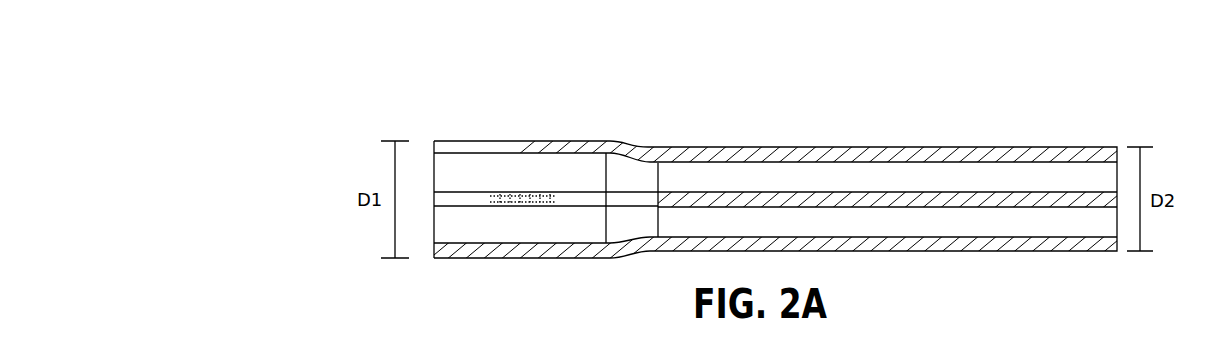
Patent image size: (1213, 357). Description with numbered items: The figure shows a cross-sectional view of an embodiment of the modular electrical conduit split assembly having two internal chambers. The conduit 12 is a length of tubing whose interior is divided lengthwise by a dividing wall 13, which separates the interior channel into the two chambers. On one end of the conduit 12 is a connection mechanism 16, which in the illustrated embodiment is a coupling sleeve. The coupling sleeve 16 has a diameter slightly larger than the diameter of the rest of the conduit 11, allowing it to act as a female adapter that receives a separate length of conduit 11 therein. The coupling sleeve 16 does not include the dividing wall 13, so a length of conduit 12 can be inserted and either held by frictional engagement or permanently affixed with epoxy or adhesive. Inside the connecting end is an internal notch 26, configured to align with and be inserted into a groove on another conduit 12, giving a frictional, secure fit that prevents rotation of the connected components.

The conduit 11 is at (783, 160).
The conduit 12 is at (935, 147).
The dividing wall 13 is at (706, 192).
The connection mechanism 16 is at (545, 141).
The internal notch 26 is at (515, 206).